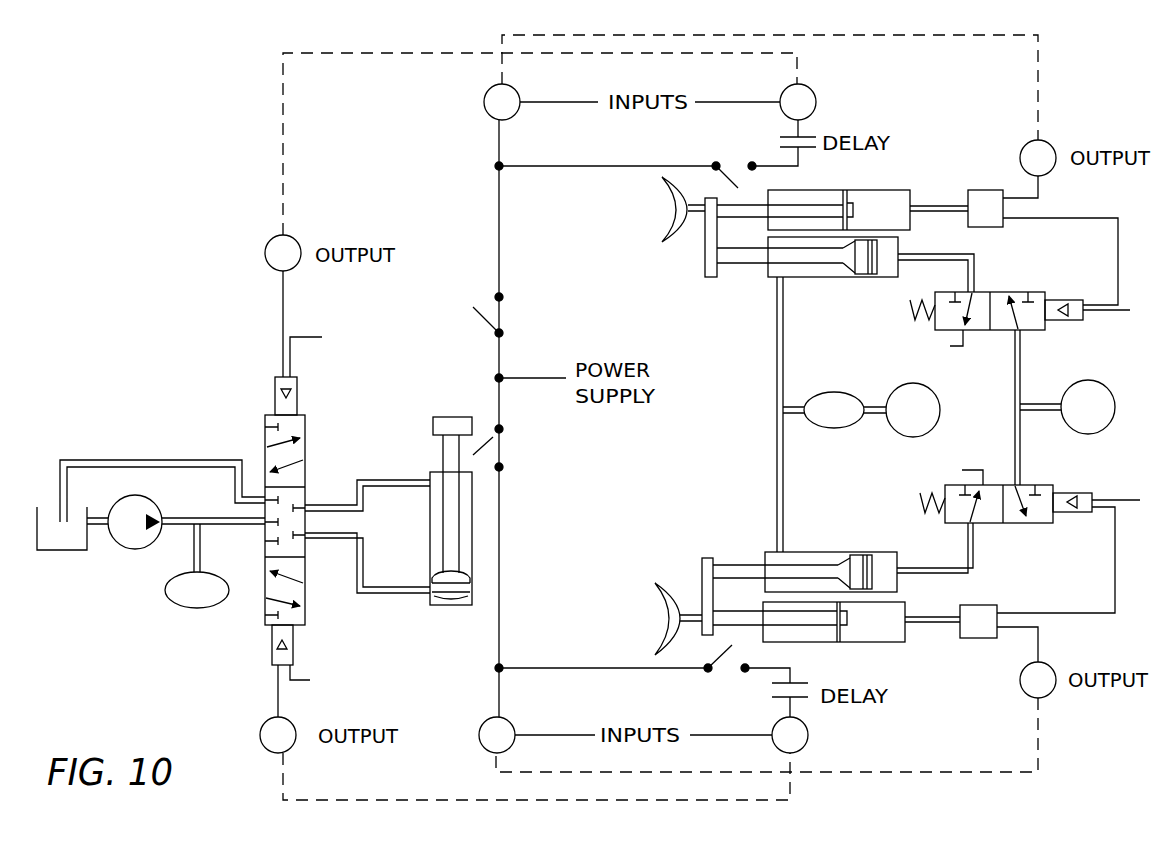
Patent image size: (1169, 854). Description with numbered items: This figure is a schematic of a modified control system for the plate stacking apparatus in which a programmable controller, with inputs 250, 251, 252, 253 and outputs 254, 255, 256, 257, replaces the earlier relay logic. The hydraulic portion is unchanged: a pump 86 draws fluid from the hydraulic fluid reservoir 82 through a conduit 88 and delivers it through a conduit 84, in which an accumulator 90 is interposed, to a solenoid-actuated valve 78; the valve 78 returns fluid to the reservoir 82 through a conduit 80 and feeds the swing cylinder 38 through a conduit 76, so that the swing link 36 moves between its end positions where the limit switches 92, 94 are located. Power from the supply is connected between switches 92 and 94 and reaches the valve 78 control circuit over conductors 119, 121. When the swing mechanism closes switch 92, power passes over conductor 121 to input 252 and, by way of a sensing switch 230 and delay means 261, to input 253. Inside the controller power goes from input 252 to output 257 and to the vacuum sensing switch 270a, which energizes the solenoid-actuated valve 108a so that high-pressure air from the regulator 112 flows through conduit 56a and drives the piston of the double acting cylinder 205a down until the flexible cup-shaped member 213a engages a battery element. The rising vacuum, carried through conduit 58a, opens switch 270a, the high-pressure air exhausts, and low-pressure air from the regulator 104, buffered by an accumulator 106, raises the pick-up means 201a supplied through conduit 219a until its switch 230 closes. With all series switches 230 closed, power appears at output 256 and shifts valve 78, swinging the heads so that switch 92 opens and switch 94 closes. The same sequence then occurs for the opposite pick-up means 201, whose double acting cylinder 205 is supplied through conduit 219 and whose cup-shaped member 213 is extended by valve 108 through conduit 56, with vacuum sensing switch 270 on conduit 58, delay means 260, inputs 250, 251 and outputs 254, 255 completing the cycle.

The swing link 36 is at (452, 417).
The swing cylinder 38 is at (430, 528).
The conduit 56 is at (922, 254).
The conduit 56a is at (908, 568).
The conduit 58 is at (938, 206).
The conduit 58a is at (940, 624).
The conduit 76 is at (408, 480).
The solenoid-actuated valve 78 is at (305, 447).
The conduit 80 is at (222, 460).
The hydraulic fluid reservoir 82 is at (82, 552).
The conduit 84 is at (216, 526).
The pump 86 is at (153, 503).
The conduit 88 is at (100, 527).
The accumulator 90 is at (204, 608).
The limit switch 92 is at (501, 447).
The limit switch 94 is at (504, 316).
The regulator 104 is at (917, 384).
The accumulator 106 is at (830, 392).
The solenoid-actuated valve 108 is at (990, 292).
The solenoid-actuated valve 108a is at (1013, 524).
The regulator 112 is at (1090, 381).
The conductor 119 is at (499, 225).
The conductor 121 is at (500, 582).
The pick-up means 201 is at (752, 274).
The pick-up means 201a is at (749, 557).
The double acting cylinder 205 is at (816, 280).
The double acting cylinder 205a is at (818, 552).
The flexible cup-shaped member 213 is at (662, 210).
The flexible cup-shaped member 213a is at (665, 616).
The conduit 219 is at (786, 352).
The conduit 219a is at (786, 473).
The push-button sensing switch 230 is at (742, 162).
The programmable controller input 250 is at (484, 103).
The programmable controller input 251 is at (814, 97).
The programmable controller input 252 is at (485, 720).
The programmable controller input 253 is at (808, 736).
The programmable controller output 254 is at (297, 240).
The programmable controller output 255 is at (1050, 143).
The programmable controller output 256 is at (261, 732).
The programmable controller output 257 is at (1051, 665).
The delay means 260 is at (813, 134).
The delay means 261 is at (797, 683).
The vacuum sensing switch 270 is at (985, 190).
The vacuum sensing switch 270a is at (985, 605).